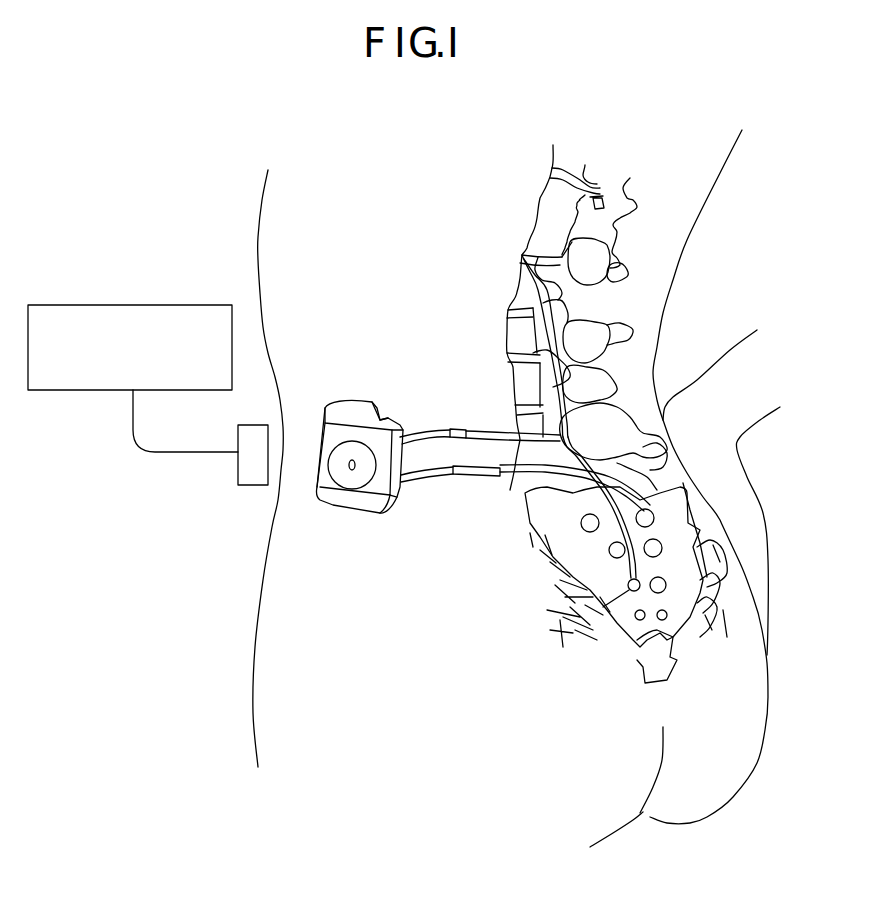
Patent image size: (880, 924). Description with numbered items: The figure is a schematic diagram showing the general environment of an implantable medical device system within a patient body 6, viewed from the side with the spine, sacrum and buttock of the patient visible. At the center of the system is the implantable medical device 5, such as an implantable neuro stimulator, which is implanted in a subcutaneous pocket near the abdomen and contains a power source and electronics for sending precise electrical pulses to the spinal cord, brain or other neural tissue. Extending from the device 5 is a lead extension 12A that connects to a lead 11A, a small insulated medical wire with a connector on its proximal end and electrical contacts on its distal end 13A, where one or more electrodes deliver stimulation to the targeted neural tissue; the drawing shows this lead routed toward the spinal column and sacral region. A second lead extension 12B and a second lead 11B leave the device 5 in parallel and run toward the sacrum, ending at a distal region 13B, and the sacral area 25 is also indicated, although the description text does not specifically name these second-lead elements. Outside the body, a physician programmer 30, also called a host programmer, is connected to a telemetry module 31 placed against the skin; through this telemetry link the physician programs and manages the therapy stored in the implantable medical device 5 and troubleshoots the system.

The implantable medical device 5 is at (350, 405).
The patient body 6 is at (258, 232).
The lead 11A is at (500, 433).
The second lead 11B is at (523, 478).
The lead extension 12A is at (450, 430).
The second lead connector 12B is at (415, 500).
The distal end 13A is at (522, 253).
The sacrum 13B is at (567, 627).
The sacral nerve region 25 is at (687, 552).
The physician programmer 30 is at (115, 305).
The telemetry module 31 is at (245, 425).